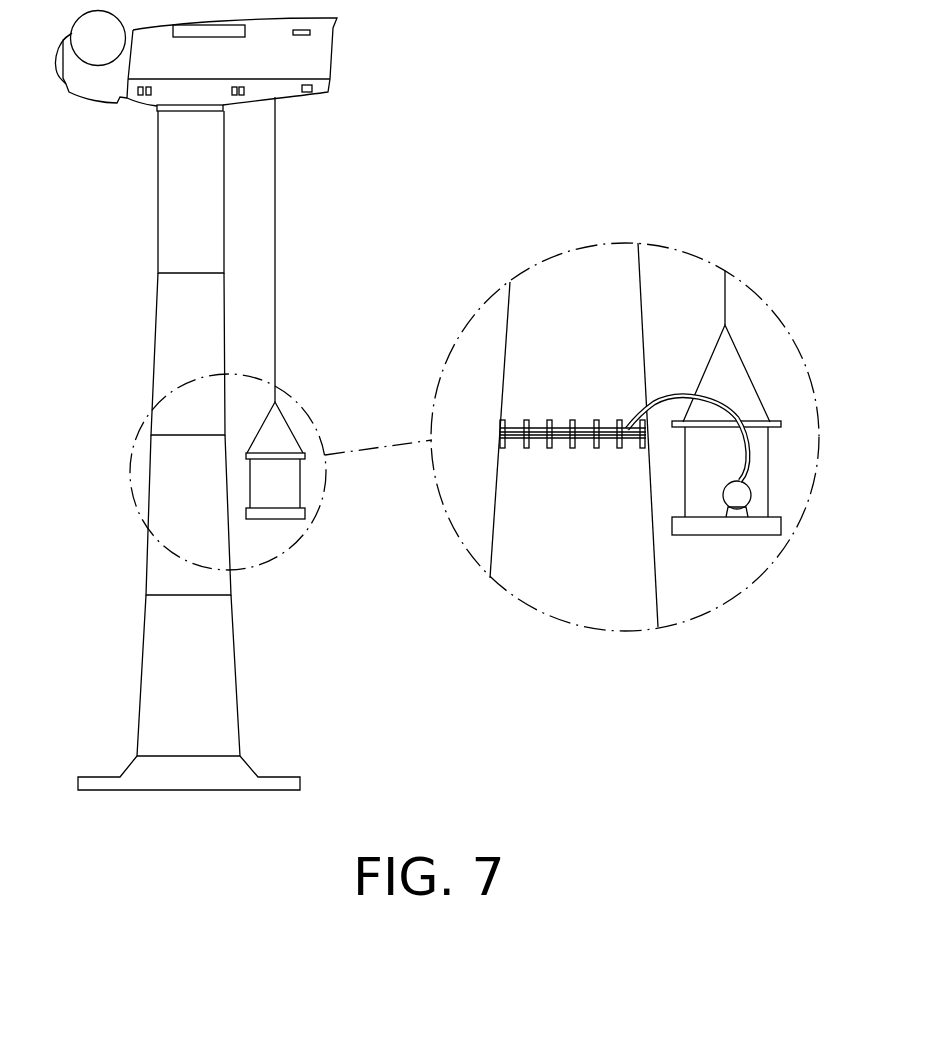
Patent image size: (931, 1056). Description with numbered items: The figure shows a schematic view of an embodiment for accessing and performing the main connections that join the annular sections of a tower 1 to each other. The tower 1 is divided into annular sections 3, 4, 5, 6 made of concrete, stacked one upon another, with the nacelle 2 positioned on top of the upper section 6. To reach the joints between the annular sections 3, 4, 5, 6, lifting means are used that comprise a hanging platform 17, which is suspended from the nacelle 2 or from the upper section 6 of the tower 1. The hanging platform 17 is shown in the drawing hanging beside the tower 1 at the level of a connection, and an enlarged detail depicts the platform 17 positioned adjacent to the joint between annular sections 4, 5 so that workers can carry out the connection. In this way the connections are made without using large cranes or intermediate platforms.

The tower 1 is at (133, 410).
The nacelle 2 is at (138, 114).
The annular section 3 is at (190, 700).
The annular section 4 is at (187, 524).
The annular section 5 is at (186, 337).
The upper section 6 is at (190, 192).
The hanging platform 17 is at (275, 437).